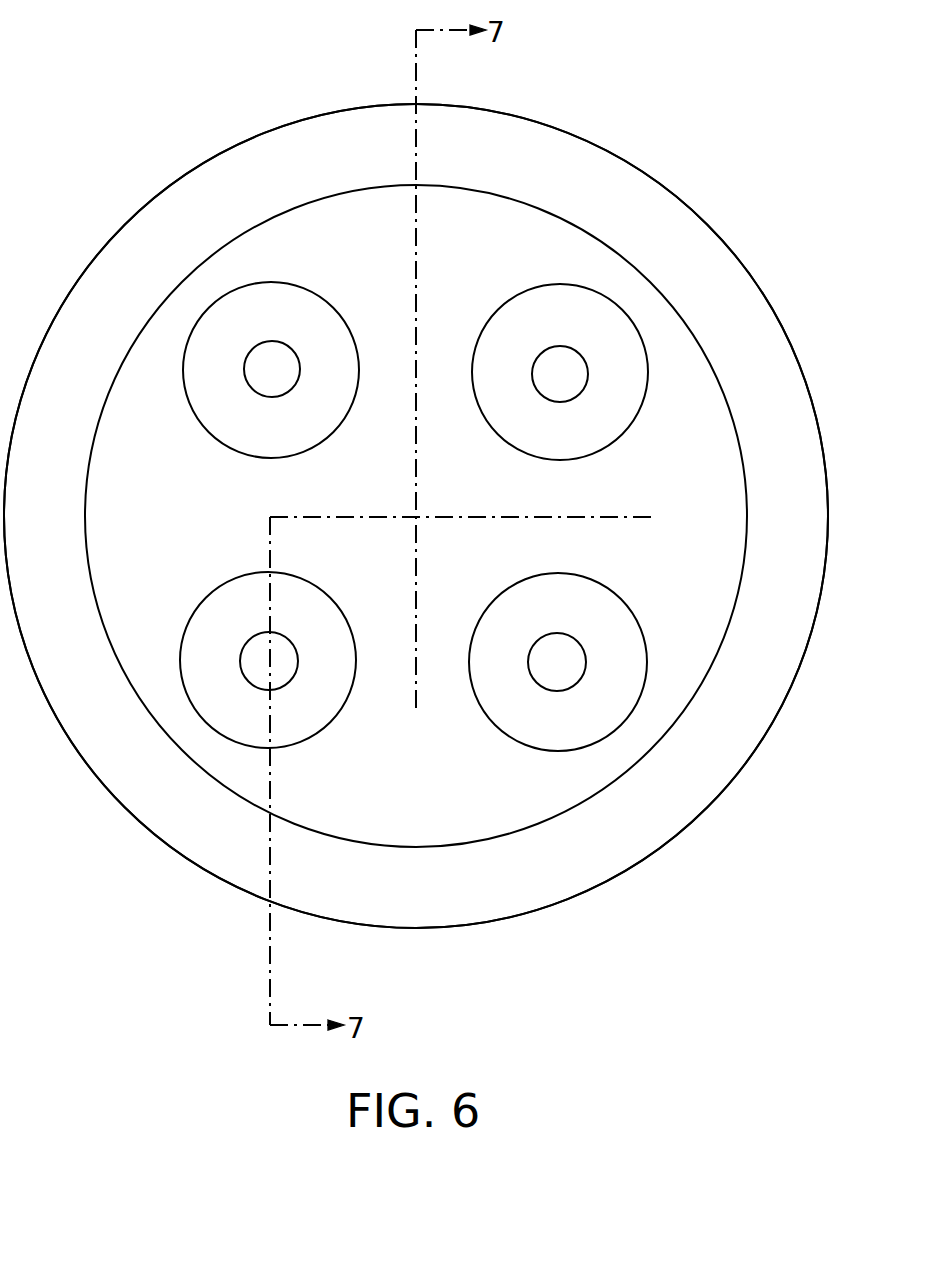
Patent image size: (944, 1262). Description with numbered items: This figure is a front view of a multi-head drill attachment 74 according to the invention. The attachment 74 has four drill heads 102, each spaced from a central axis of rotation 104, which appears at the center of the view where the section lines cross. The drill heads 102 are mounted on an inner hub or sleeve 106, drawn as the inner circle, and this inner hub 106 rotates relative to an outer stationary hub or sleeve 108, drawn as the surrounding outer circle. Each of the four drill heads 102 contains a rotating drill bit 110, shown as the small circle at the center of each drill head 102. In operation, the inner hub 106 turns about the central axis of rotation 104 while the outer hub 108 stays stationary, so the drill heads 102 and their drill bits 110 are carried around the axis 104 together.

The multi-head drill attachment 74 is at (742, 162).
The outer stationary hub or sleeve 108 is at (212, 171).
The inner hub or sleeve 106 is at (531, 214).
The drill head 102 is at (607, 430).
The rotating drill bit 110 is at (262, 380).
The central axis of rotation 104 is at (416, 517).